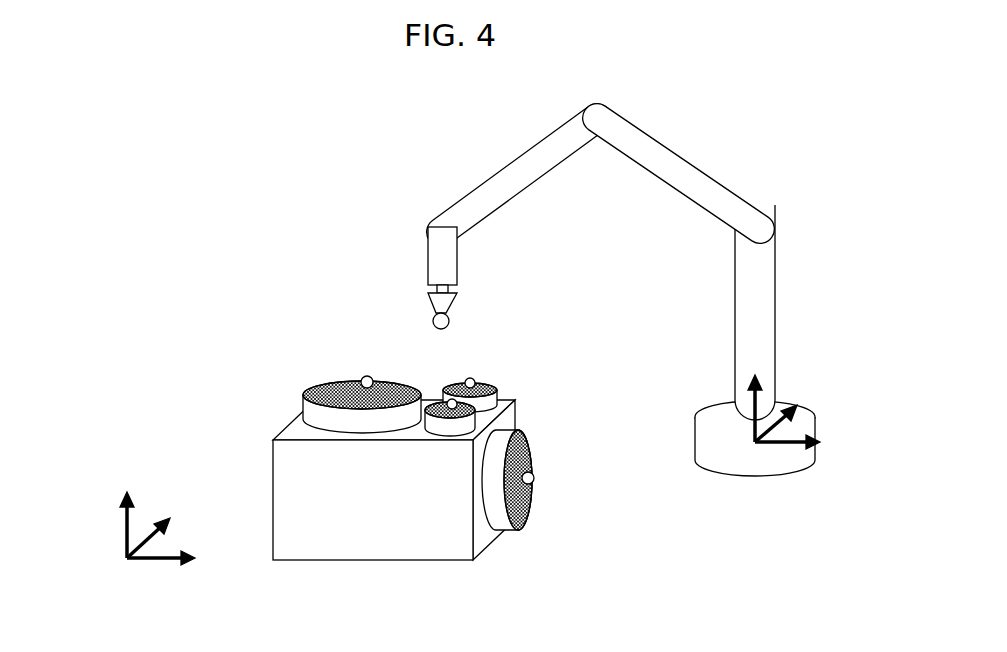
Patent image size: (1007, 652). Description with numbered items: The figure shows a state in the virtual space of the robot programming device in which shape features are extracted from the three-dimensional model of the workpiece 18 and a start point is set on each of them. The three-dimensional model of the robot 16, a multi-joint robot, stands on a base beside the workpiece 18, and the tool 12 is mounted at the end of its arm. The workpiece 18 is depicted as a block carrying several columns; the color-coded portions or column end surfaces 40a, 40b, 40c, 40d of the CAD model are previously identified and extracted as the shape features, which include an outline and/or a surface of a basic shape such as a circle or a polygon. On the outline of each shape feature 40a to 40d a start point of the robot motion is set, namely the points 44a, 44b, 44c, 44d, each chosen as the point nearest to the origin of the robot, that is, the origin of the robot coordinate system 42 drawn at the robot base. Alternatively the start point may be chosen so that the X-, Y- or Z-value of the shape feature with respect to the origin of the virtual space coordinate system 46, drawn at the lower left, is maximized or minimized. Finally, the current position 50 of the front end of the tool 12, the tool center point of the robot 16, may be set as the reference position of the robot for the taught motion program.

The tool 12 is at (437, 250).
The robot 16 is at (692, 148).
The workpiece 18 is at (248, 440).
The shape feature 40a is at (323, 383).
The shape feature 40b is at (493, 392).
The shape feature 40c is at (432, 418).
The shape feature 40d is at (533, 512).
The robot coordinate system 42 is at (781, 444).
The start point 44a is at (367, 375).
The start point 44b is at (470, 378).
The start point 44c is at (452, 409).
The start point 44d is at (535, 478).
The virtual space coordinate system 46 is at (148, 562).
The current position of the front end of the tool 50 is at (433, 318).